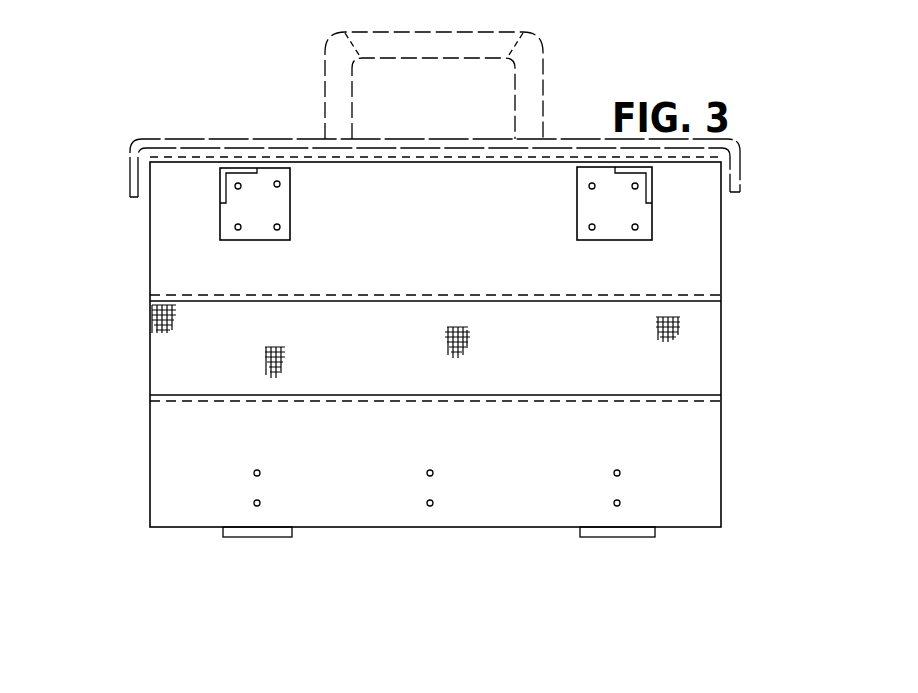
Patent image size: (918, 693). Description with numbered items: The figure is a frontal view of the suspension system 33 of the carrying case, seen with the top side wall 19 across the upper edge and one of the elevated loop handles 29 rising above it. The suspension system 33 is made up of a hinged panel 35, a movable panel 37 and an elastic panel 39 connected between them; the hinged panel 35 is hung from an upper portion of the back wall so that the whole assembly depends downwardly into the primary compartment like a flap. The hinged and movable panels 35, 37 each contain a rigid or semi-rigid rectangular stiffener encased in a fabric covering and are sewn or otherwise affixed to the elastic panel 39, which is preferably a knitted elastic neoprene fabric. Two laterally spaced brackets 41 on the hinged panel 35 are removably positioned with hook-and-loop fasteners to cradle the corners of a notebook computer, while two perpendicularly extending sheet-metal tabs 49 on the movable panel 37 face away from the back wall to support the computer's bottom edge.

The top side wall 19 is at (200, 138).
The handle 29 is at (545, 52).
The suspension system 33 is at (98, 375).
The hinged panel 35 is at (720, 213).
The movable panel 37 is at (722, 449).
The elastic panel 39 is at (706, 362).
The bracket 41 is at (219, 222).
The tab 49 is at (255, 537).